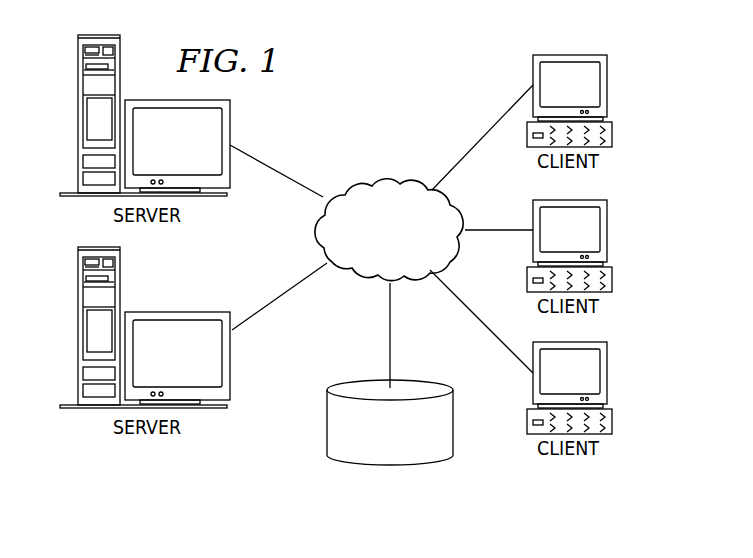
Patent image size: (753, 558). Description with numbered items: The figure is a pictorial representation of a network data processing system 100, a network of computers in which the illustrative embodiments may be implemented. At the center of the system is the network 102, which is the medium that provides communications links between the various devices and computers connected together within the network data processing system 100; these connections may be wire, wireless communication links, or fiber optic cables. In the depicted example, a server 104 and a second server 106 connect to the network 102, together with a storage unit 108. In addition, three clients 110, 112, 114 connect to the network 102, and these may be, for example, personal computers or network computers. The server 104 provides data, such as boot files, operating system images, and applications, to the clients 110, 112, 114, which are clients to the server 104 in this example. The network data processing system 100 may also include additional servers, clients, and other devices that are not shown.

The network data processing system 100 is at (442, 62).
The network 102 is at (362, 182).
The server 104 is at (78, 115).
The server 106 is at (77, 328).
The storage unit 108 is at (372, 465).
The client 110 is at (607, 87).
The client 112 is at (607, 232).
The client 114 is at (607, 380).